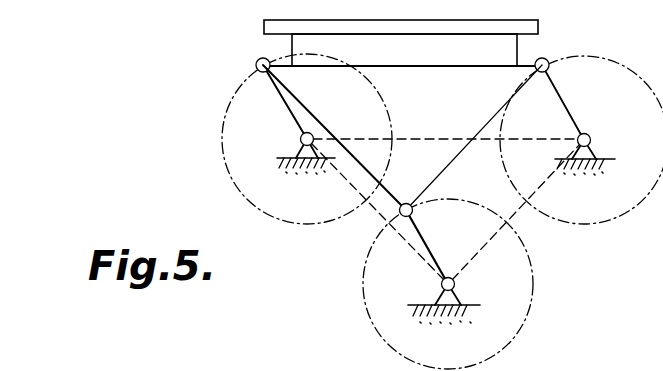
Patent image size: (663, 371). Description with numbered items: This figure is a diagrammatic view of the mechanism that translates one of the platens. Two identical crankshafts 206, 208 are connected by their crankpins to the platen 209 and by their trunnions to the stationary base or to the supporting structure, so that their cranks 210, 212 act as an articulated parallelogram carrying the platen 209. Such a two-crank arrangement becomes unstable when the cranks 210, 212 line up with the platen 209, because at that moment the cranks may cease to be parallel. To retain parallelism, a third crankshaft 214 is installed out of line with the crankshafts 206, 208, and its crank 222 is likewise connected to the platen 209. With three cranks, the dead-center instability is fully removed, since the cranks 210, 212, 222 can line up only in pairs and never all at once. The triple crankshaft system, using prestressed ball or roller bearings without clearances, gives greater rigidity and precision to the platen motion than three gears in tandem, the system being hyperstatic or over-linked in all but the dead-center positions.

The crankshaft 206 is at (300, 139).
The crankshaft 208 is at (591, 138).
The platen 209 is at (538, 27).
The crank 210 is at (284, 100).
The crank 212 is at (562, 99).
The third crankshaft 214 is at (455, 285).
The crank 222 is at (418, 238).